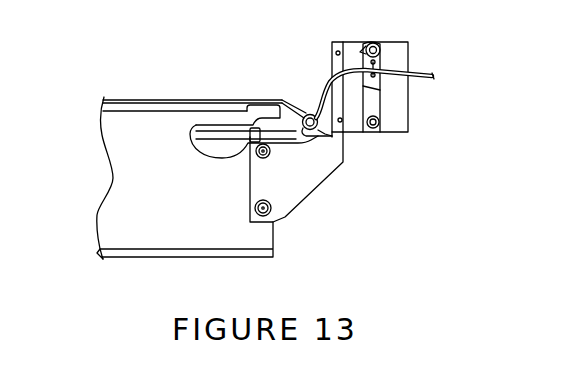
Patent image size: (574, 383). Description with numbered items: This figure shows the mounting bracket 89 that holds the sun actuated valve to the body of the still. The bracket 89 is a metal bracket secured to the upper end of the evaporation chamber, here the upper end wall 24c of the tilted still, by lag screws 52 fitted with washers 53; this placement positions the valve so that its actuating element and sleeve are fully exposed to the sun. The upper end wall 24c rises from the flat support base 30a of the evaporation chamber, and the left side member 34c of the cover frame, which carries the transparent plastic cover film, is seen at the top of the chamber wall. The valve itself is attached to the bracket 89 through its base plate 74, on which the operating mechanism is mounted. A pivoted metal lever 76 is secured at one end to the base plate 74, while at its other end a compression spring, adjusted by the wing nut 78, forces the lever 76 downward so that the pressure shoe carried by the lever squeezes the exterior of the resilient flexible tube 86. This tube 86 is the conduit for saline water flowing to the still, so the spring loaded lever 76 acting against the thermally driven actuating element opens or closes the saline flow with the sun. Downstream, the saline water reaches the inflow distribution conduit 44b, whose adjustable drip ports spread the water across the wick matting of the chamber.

The upper end wall of evaporation chamber 24c is at (100, 210).
The flat support base for evaporation chamber 30a is at (141, 260).
The saline water inflow distribution conduit 44b is at (217, 126).
The left side member of cover frame 34c is at (310, 114).
The lag screws 52 is at (257, 158).
The washers 53 is at (256, 201).
The base plate 74 is at (357, 42).
The pivoted metal lever 76 is at (383, 103).
The wing nut 78 is at (380, 48).
The resilient flexible tube saline water conduit 86 is at (434, 74).
The mounting bracket for solar actuated valve 89 is at (320, 185).